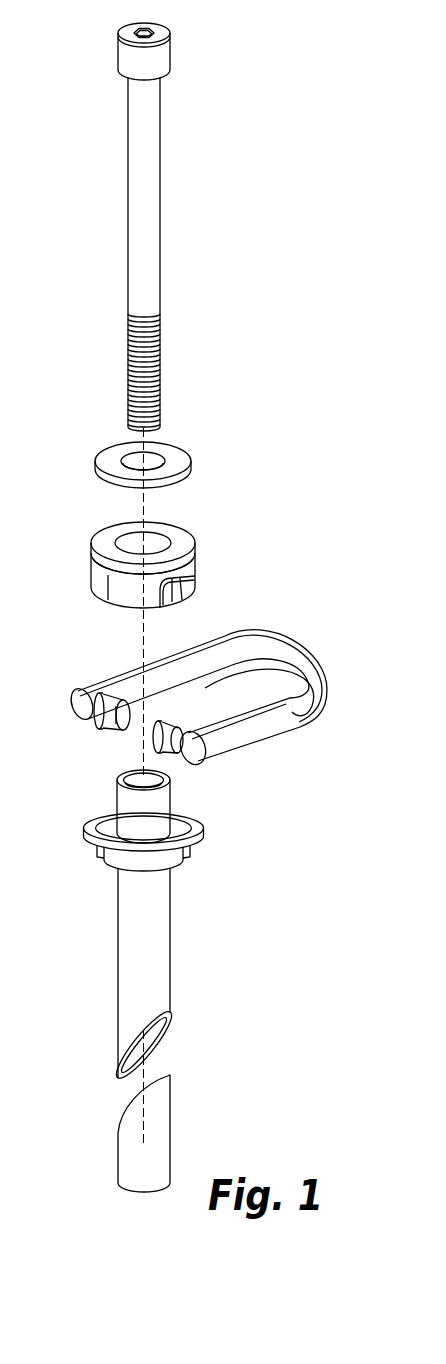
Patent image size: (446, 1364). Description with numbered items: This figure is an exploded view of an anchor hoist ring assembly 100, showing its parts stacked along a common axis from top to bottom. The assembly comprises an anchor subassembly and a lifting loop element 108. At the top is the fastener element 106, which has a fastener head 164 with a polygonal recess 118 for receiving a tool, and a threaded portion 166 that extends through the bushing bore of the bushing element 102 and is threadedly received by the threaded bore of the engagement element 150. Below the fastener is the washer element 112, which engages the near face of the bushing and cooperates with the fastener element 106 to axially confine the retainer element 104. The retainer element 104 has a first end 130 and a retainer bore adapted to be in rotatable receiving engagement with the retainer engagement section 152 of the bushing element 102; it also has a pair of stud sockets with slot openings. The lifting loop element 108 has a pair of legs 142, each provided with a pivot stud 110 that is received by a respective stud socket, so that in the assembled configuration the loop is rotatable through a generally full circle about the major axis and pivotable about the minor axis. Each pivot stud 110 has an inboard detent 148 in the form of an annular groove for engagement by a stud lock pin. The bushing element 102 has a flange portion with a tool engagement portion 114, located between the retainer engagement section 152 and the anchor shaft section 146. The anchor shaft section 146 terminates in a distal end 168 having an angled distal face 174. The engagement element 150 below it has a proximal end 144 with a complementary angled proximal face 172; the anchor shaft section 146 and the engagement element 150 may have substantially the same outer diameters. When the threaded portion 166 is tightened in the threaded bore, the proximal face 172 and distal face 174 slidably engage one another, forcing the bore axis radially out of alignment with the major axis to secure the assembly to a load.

The anchor hoist ring assembly 100 is at (334, 137).
The bushing element 102 is at (276, 884).
The retainer element 104 is at (238, 538).
The fastener element 106 is at (202, 163).
The lifting loop element 108 is at (322, 627).
The pivot stud 110 is at (100, 720).
The washer element 112 is at (193, 444).
The tool engagement portion 114 is at (95, 857).
The polygonal recess 118 is at (140, 24).
The first end 130 is at (108, 534).
The leg 142 is at (122, 670).
The proximal end 144 is at (192, 1105).
The anchor shaft section 146 is at (127, 937).
The inboard detent 148 is at (122, 736).
The engagement element 150 is at (83, 1148).
The retainer engagement section 152 is at (165, 802).
The fastener head 164 is at (170, 46).
The threaded portion 166 is at (160, 352).
The distal end 168 is at (92, 1018).
The proximal face 172 is at (135, 1105).
The distal face 174 is at (167, 1022).